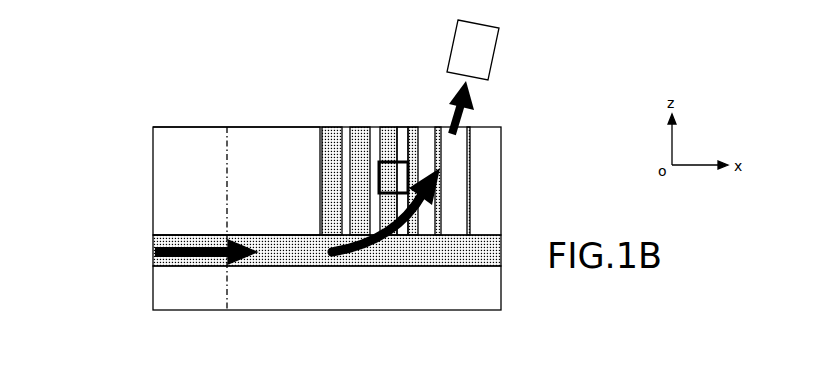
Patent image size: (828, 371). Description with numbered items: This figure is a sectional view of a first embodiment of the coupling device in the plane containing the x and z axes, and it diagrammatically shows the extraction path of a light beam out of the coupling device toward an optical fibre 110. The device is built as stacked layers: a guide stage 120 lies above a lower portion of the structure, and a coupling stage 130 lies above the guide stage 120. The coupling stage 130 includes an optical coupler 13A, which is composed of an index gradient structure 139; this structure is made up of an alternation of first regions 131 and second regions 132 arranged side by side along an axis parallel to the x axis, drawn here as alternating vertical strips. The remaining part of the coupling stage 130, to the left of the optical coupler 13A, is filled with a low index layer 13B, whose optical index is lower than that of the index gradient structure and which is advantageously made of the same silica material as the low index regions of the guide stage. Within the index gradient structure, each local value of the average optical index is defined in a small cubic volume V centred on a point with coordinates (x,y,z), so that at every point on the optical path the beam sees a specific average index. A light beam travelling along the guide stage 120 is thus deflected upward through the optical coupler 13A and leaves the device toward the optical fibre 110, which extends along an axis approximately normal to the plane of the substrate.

The optical fibre 110 is at (160, 287).
The guide stage 120 is at (153, 266).
The coupling stage 130 is at (153, 235).
The low index layer 13B is at (317, 110).
The optical coupler 13A is at (437, 158).
The index gradient structure 139 is at (438, 181).
The first regions 131 is at (400, 134).
The second regions 132 is at (358, 145).
The cubic volume V is at (378, 178).